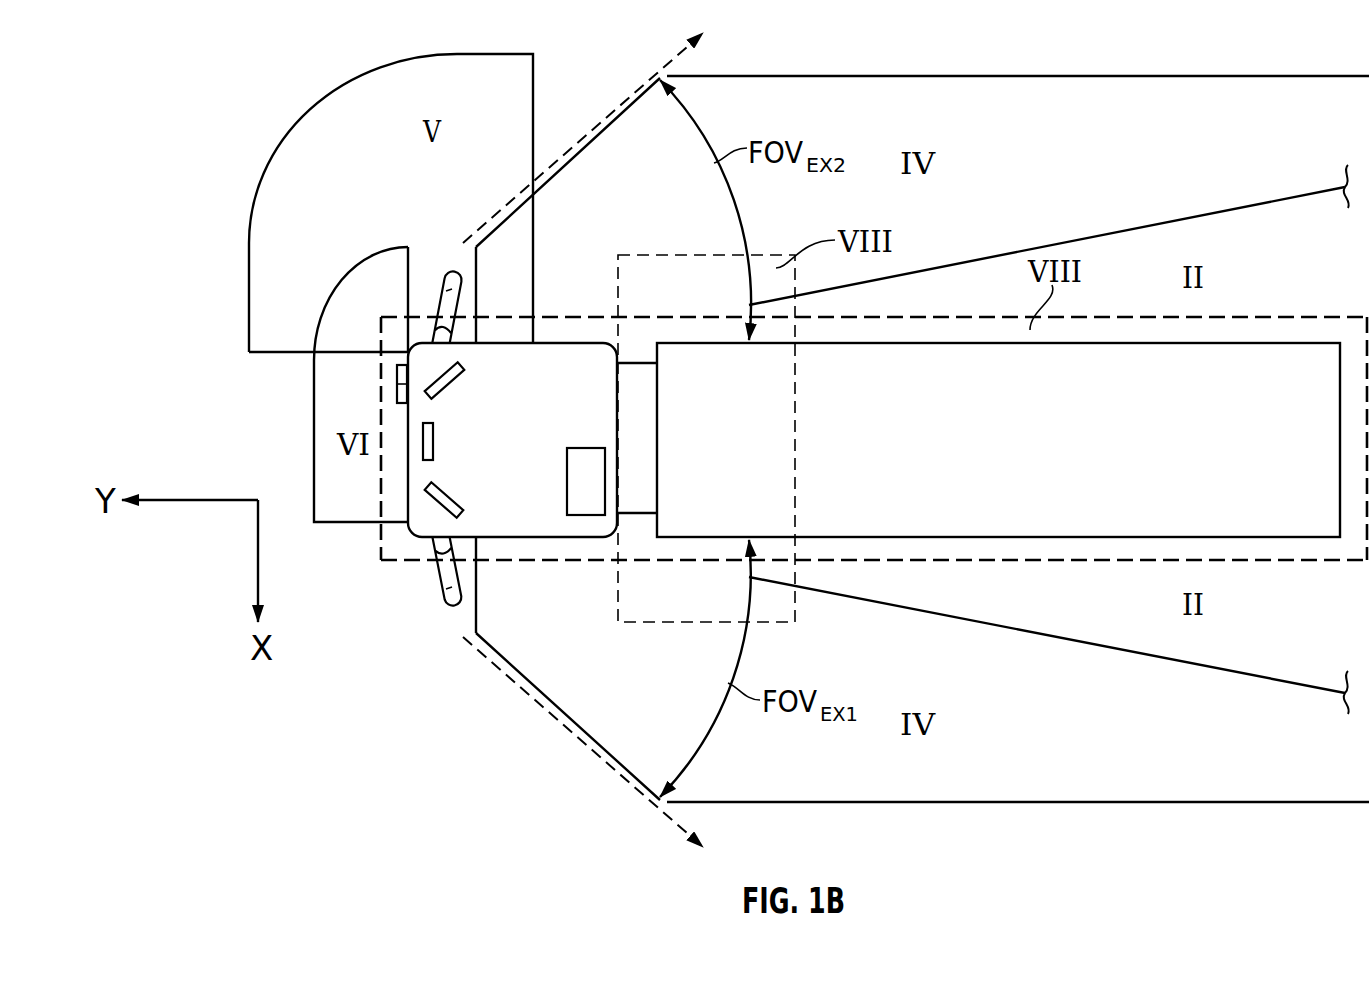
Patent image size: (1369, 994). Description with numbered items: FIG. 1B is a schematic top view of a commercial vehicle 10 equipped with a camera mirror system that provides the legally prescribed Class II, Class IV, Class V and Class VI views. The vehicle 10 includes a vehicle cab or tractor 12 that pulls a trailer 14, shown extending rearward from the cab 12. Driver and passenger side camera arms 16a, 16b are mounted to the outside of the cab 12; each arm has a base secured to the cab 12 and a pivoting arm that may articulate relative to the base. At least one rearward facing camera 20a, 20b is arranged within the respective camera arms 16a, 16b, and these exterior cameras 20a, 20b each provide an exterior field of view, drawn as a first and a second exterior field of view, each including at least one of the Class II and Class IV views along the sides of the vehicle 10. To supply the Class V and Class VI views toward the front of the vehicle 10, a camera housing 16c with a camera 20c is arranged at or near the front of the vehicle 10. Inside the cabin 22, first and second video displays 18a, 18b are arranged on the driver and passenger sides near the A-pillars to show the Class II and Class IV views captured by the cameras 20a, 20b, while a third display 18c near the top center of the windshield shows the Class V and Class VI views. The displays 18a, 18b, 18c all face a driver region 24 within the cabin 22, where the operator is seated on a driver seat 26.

The commercial vehicle 10 is at (392, 332).
The vehicle cab 12 is at (405, 534).
The trailer 14 is at (1276, 340).
The driver side camera arm 16a is at (440, 584).
The passenger side camera arm 16b is at (440, 292).
The camera housing 16c is at (397, 390).
The first video display 18a is at (448, 498).
The second video display 18b is at (446, 380).
The third display 18c is at (423, 448).
The rearward facing camera 20a is at (456, 590).
The rearward facing camera 20b is at (452, 292).
The camera 20c is at (397, 372).
The cabin 22 is at (549, 366).
The driver region 24 is at (562, 467).
The driver seat 26 is at (596, 455).